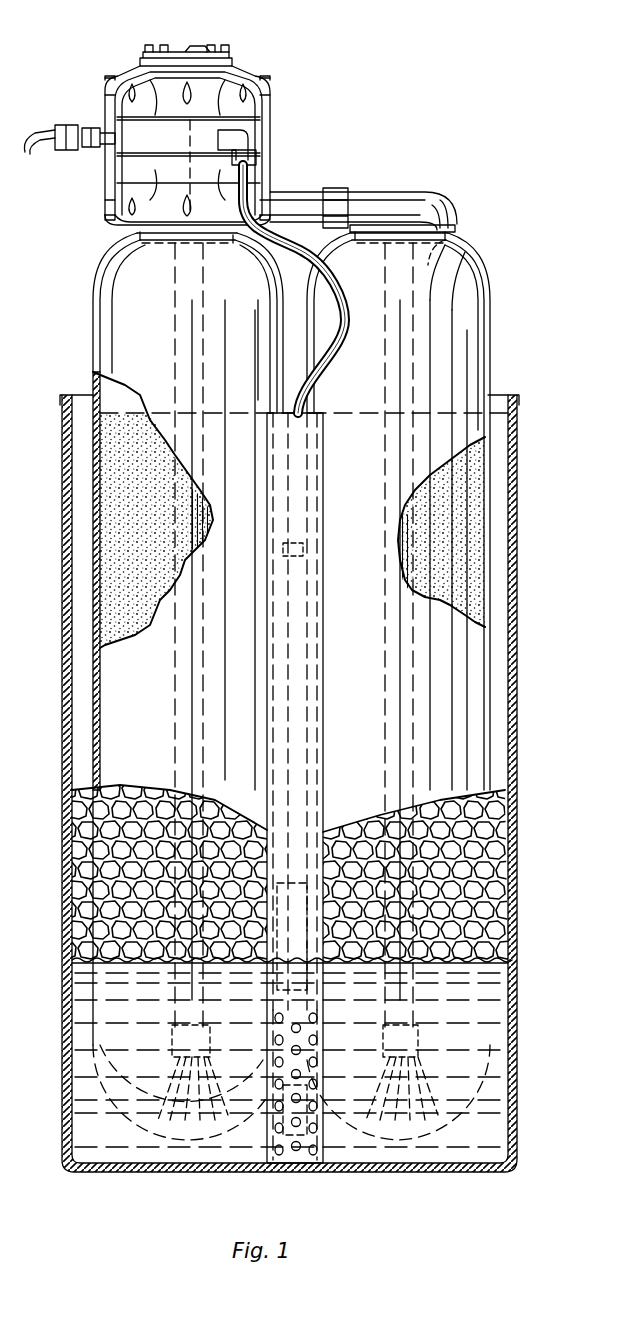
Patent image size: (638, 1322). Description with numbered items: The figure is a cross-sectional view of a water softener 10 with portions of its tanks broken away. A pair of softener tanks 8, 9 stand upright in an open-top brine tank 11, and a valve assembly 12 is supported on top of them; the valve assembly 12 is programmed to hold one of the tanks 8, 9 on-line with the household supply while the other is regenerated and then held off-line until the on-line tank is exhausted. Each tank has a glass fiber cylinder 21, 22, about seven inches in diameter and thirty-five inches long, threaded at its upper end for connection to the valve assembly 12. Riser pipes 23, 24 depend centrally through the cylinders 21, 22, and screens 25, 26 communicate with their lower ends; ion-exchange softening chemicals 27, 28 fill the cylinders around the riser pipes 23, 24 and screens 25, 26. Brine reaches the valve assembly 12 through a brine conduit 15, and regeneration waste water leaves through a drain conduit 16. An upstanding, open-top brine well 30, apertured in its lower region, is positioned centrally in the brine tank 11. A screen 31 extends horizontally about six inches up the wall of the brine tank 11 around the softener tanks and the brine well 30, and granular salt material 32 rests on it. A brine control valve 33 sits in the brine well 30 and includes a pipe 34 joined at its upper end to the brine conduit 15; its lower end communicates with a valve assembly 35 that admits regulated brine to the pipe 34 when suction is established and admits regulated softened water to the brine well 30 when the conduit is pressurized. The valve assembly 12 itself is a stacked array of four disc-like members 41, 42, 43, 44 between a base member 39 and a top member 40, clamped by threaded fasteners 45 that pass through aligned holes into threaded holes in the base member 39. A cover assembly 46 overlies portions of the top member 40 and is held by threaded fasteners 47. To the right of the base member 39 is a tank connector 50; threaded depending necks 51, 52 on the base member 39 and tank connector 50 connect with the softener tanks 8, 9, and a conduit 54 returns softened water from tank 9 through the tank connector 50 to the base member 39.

The softener tank 8 is at (90, 272).
The softener tank 9 is at (490, 270).
The water softener 10 is at (352, 64).
The brine tank 11 is at (517, 566).
The valve assembly 12 is at (191, 114).
The brine conduit 15 is at (330, 275).
The drain conduit 16 is at (40, 148).
The cylinder 21 is at (100, 541).
The cylinder 22 is at (486, 563).
The riser pipe 23 is at (192, 520).
The riser pipe 24 is at (405, 540).
The screen 25 is at (218, 1086).
The screen 26 is at (438, 1086).
The ion-exchange softening chemical 27 is at (140, 484).
The ion-exchange softening chemical 28 is at (466, 511).
The brine well 30 is at (323, 712).
The screen 31 is at (145, 962).
The granular salt material 32 is at (465, 904).
The brine control valve 33 is at (307, 924).
The pipe 34 is at (303, 594).
The valve assembly 35 is at (318, 1125).
The base member 39 is at (105, 190).
The top member 40 is at (270, 104).
The disc-like member 41 is at (270, 118).
The disc-like member 42 is at (270, 136).
The disc-like member 43 is at (270, 154).
The disc-like member 44 is at (270, 172).
The threaded fastener 45 is at (104, 80).
The cover assembly 46 is at (209, 42).
The threaded fastener 47 is at (148, 50).
The tank connector 50 is at (455, 205).
The threaded depending neck 51 is at (230, 243).
The threaded depending neck 52 is at (428, 240).
The conduit 54 is at (330, 190).